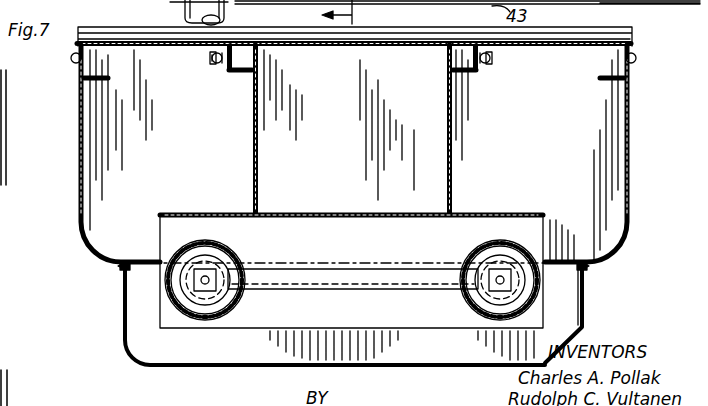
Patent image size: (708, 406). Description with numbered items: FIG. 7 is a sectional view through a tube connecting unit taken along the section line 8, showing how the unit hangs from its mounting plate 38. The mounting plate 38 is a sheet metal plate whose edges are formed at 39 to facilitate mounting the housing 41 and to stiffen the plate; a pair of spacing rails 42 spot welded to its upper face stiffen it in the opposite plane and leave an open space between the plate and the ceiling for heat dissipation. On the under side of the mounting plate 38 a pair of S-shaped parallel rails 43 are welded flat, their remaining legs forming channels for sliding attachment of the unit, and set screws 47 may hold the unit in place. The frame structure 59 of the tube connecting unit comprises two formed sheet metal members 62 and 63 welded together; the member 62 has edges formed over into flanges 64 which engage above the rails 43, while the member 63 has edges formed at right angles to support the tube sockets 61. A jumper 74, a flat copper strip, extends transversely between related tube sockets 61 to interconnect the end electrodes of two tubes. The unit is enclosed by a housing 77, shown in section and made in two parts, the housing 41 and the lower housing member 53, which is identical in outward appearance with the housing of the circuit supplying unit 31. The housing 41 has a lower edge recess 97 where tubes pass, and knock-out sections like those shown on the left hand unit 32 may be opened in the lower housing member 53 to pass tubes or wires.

The section line 8- 8 is at (350, 13).
The circuit supplying unit 31 is at (4, 193).
The left hand unit 32 is at (8, 389).
The mounting plate 38 is at (560, 48).
The formed edges 39 is at (92, 80).
The housing 41 is at (628, 168).
The spacing rails 42 is at (632, 34).
The parallel rails 43 is at (226, 66).
The set screws 47 is at (212, 58).
The lower housing member 53 is at (182, 368).
The frame structure 59 is at (462, 213).
The tube sockets 61 is at (172, 300).
The formed sheet metal member 62 is at (258, 147).
The formed sheet metal member 63 is at (178, 215).
The flanges 64 is at (252, 56).
The jumper 74 is at (339, 266).
The housing 77 is at (120, 266).
The lower edge recess 97 is at (368, 290).